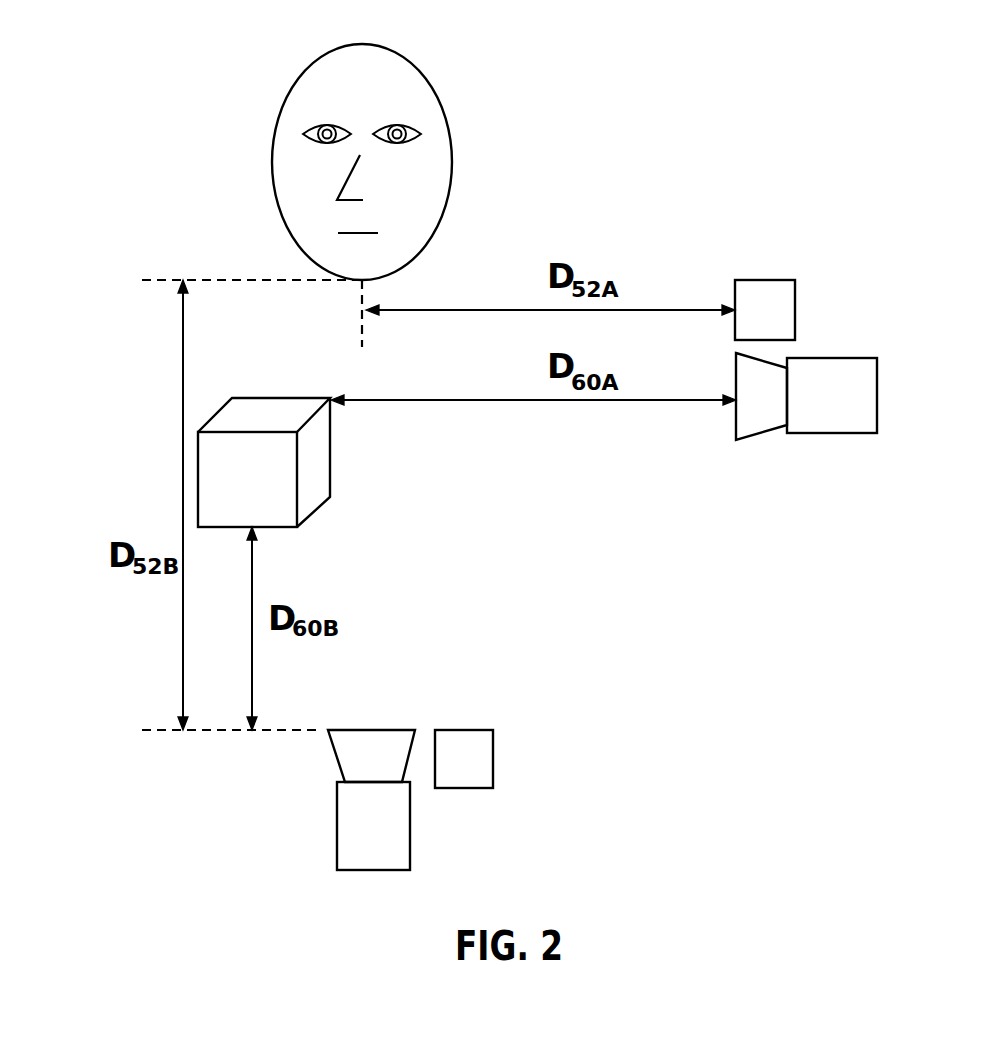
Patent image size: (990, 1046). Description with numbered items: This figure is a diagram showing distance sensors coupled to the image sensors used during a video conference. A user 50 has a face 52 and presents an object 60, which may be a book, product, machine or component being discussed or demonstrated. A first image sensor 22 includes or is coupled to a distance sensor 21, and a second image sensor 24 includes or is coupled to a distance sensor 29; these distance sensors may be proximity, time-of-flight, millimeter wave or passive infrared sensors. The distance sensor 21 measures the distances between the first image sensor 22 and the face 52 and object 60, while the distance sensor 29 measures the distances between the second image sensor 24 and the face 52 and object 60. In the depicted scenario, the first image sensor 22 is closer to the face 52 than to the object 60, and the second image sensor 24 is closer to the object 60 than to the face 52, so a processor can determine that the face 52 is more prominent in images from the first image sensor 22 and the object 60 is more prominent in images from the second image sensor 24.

The user 50 is at (352, 162).
The face 52 is at (453, 153).
The distance sensor 21 is at (795, 308).
The first image sensor 22 is at (877, 383).
The object 60 is at (330, 455).
The second image sensor 24 is at (337, 818).
The distance sensor 29 is at (463, 790).